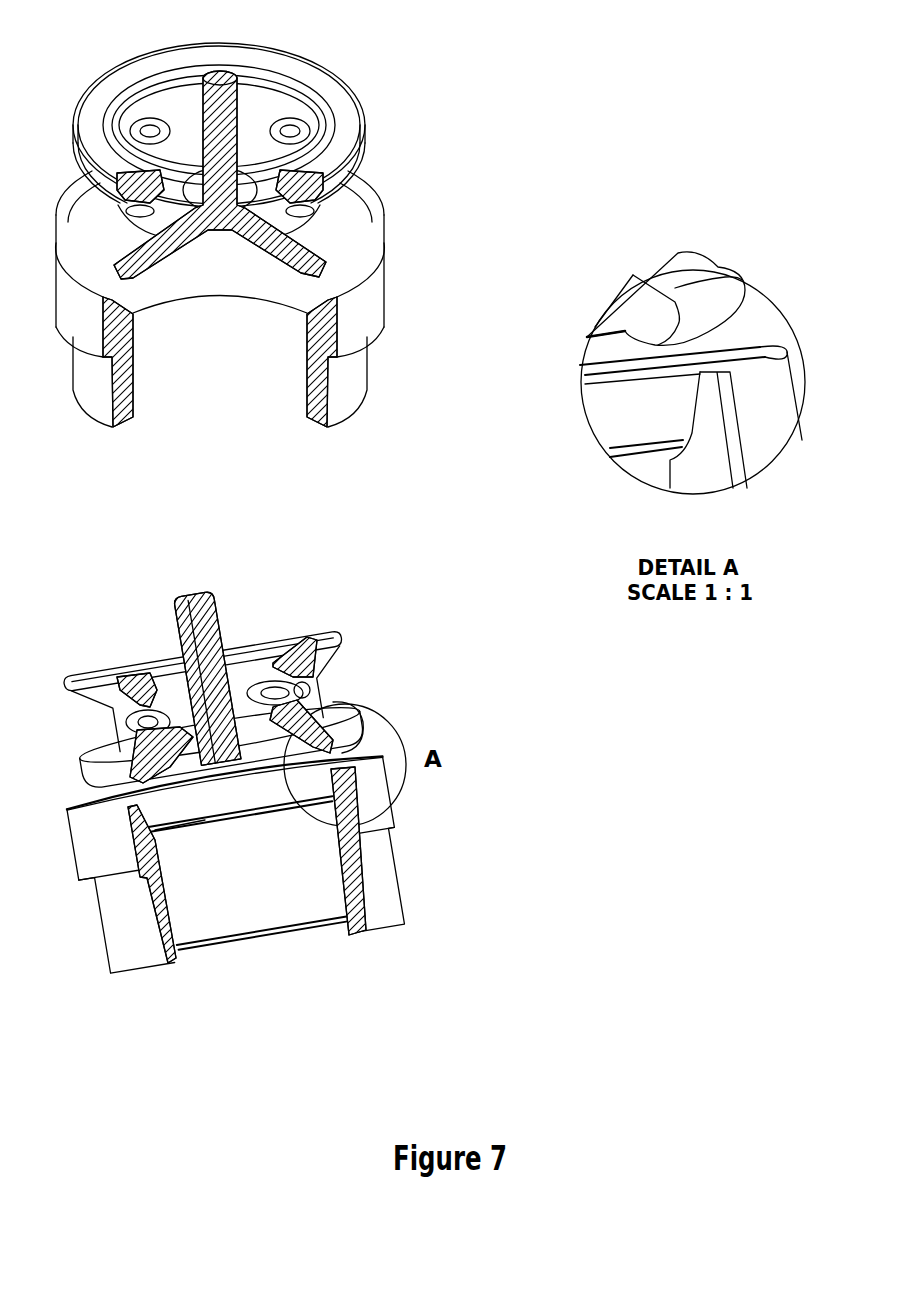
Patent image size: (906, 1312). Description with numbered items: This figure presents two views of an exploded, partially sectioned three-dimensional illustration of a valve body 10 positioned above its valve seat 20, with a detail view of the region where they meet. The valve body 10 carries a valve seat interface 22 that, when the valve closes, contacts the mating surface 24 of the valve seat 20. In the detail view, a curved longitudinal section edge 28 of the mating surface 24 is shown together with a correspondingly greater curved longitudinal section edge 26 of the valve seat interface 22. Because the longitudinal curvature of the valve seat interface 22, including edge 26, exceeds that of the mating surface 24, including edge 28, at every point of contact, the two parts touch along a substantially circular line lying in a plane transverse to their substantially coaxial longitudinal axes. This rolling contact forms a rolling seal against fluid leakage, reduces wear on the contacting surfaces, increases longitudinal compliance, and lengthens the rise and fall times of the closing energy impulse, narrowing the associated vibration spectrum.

The valve body 10 is at (343, 68).
The valve seat 20 is at (362, 408).
The valve seat interface 22 is at (347, 738).
The mating surface 24 is at (174, 808).
The curved longitudinal section edge 26 is at (675, 322).
The curved longitudinal section edge 28 is at (680, 433).